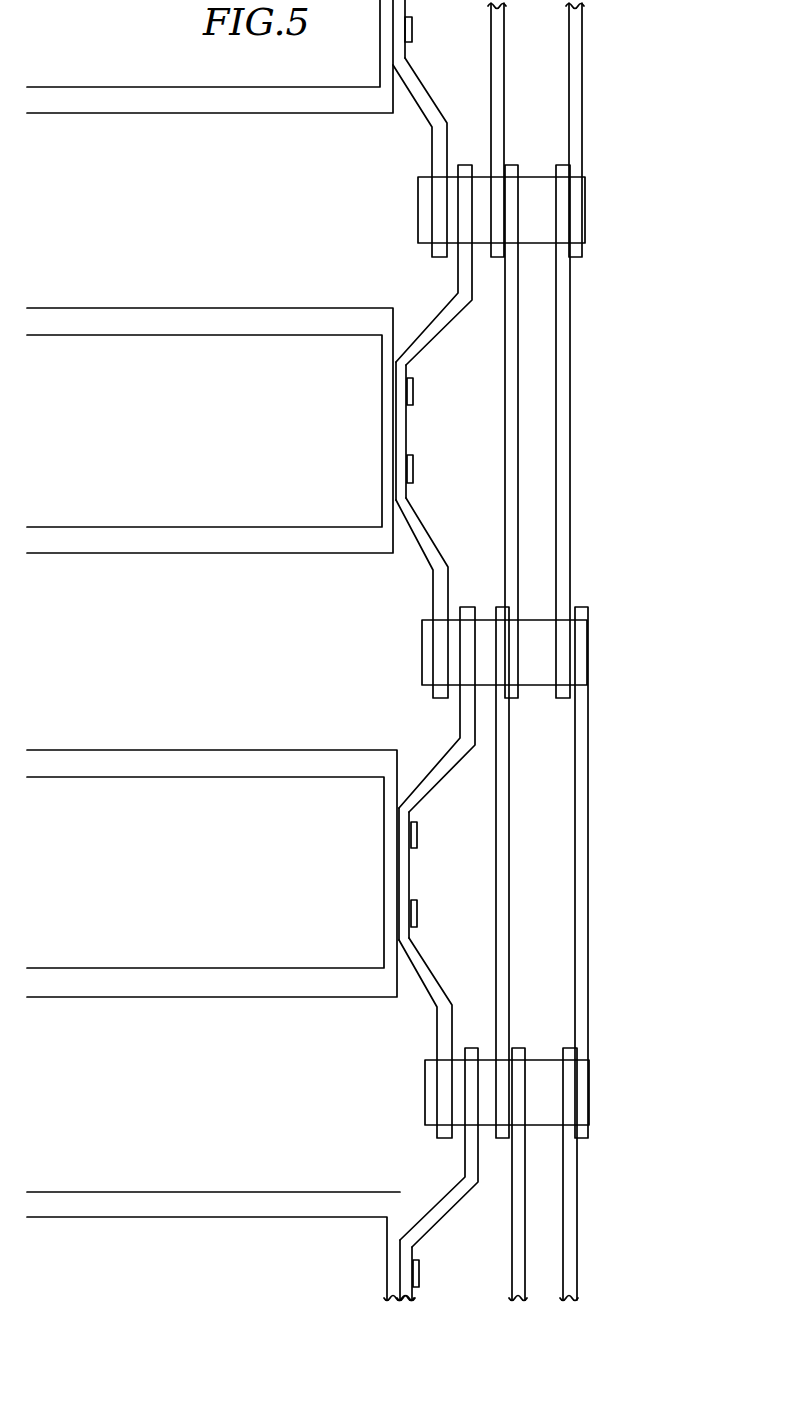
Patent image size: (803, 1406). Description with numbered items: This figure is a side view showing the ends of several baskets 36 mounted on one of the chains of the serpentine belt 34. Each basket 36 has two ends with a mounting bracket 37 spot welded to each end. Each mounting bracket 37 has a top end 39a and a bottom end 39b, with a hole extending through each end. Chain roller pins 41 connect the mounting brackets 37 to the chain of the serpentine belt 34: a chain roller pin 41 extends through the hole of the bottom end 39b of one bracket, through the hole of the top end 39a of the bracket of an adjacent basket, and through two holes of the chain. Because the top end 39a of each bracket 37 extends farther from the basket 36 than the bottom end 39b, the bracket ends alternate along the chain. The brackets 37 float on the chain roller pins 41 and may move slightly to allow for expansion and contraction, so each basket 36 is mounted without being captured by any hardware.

The serpentine belt 34 is at (582, 49).
The basket 36 is at (218, 318).
The mounting bracket 37 is at (407, 430).
The top end 39a is at (465, 285).
The bottom end 39b is at (438, 587).
The chain roller pin 41 is at (537, 233).